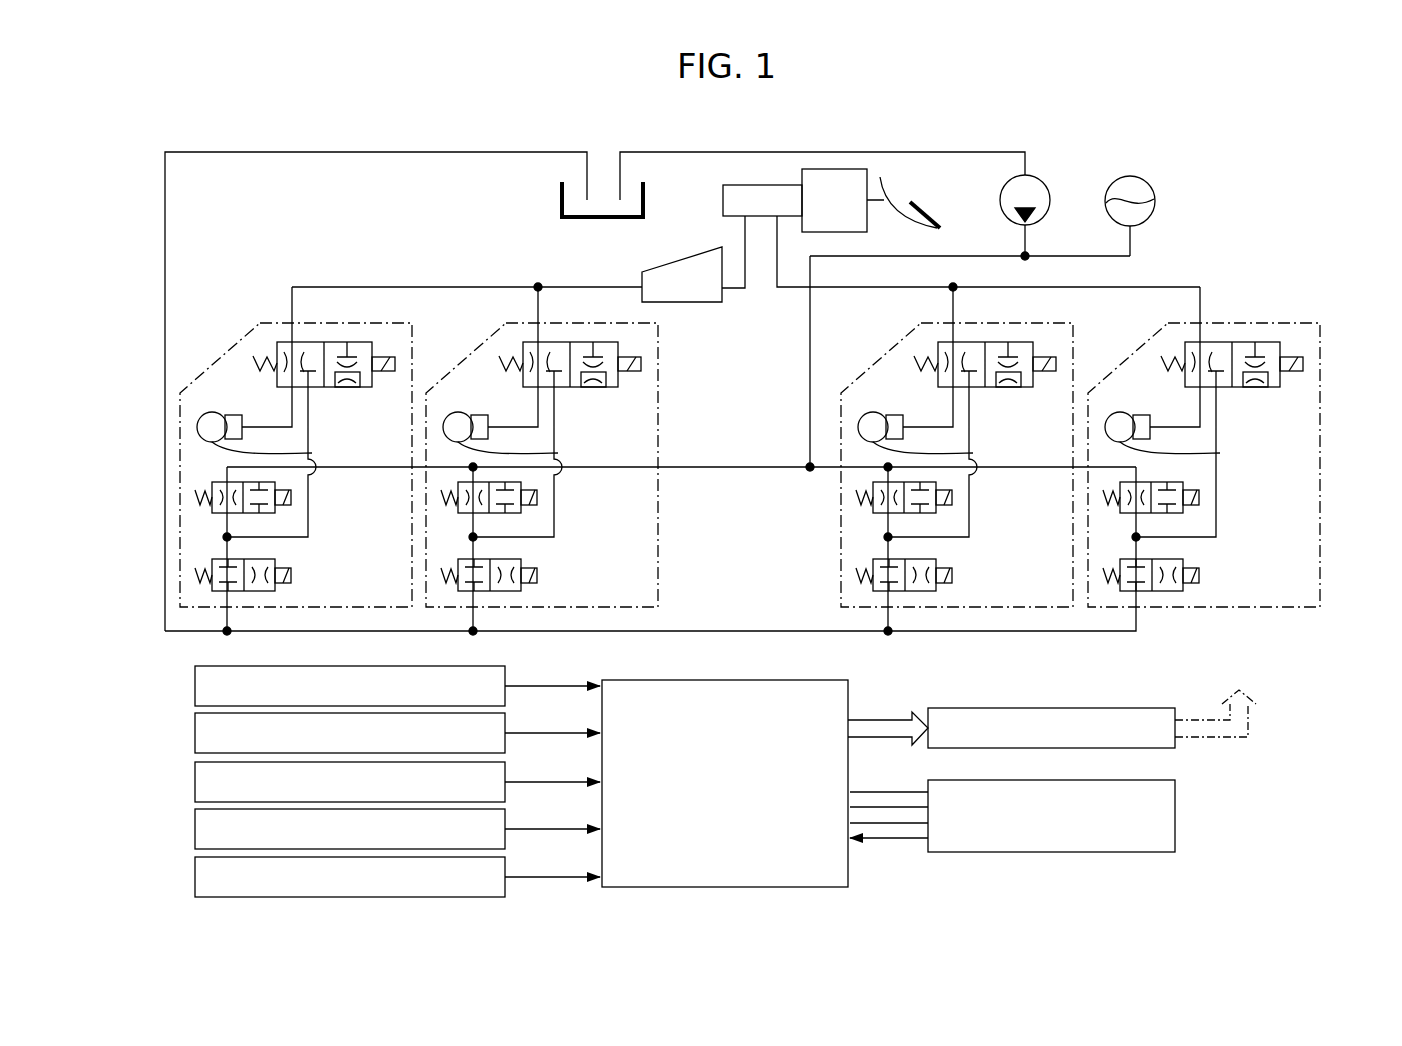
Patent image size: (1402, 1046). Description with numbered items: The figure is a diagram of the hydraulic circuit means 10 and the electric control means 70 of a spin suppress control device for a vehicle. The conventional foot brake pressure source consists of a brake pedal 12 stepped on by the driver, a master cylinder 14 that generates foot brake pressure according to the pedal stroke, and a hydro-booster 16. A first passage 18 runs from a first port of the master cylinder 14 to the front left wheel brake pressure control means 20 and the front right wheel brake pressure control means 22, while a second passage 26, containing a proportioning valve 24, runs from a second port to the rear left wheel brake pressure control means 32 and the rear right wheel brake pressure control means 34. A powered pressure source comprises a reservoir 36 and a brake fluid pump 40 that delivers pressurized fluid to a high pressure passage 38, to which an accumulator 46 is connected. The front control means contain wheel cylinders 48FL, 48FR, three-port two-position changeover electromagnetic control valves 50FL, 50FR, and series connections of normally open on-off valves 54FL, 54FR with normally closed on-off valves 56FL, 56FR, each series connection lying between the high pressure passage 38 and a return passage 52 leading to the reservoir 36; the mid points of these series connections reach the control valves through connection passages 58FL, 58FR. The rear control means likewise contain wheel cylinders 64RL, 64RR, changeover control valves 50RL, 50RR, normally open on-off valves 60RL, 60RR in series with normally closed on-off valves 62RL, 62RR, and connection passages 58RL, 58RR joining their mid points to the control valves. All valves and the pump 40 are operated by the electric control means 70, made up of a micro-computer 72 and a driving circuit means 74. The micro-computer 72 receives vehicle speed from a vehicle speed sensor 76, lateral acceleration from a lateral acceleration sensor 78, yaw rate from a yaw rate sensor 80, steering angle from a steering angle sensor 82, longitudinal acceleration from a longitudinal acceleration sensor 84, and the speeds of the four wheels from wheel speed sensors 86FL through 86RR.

The hydraulic circuit means 10 is at (148, 207).
The brake pedal 12 is at (924, 216).
The master cylinder 14 is at (740, 185).
The hydro-booster 16 is at (834, 200).
The first passage 18 is at (793, 290).
The front left wheel brake pressure control means 20 is at (876, 365).
The front right wheel brake pressure control means 22 is at (1134, 360).
The proportioning valve 24 is at (662, 270).
The second passage 26 is at (365, 286).
The rear left wheel brake pressure control means 32 is at (211, 366).
The rear right wheel brake pressure control means 34 is at (459, 358).
The reservoir 36 is at (562, 205).
The high pressure passage 38 is at (807, 401).
The brake fluid pump 40 is at (1049, 204).
The accumulator 46 is at (1155, 201).
The wheel cylinder 48FL is at (955, 453).
The wheel cylinder 48FR is at (1204, 453).
The 3-ports-2-positions changeover type electromagnetic control valve 50RL is at (310, 342).
The 3-ports-2-positions changeover type electromagnetic control valve 50RR is at (551, 342).
The 3-ports-2-positions changeover type electromagnetic control valve 50FL is at (992, 342).
The 3-ports-2-positions changeover type electromagnetic control valve 50FR is at (1215, 342).
The return passage 52 is at (738, 630).
The normally open type electromagnetic on-off valve 54FL is at (925, 517).
The normally open type electromagnetic on-off valve 54FR is at (1175, 517).
The normally closed type electromagnetic on-off valve 56FL is at (920, 560).
The normally closed type electromagnetic on-off valve 56FR is at (1175, 560).
The connection passage 58RL is at (305, 416).
The connection passage 58RR is at (555, 416).
The connection passage 58FL is at (972, 416).
The connection passage 58FR is at (1220, 416).
The normally open type electromagnetic on-off valve 60RL is at (262, 513).
The normally open type electromagnetic on-off valve 60RR is at (510, 517).
The normally closed type electromagnetic on-off valve 62RL is at (262, 559).
The normally closed type electromagnetic on-off valve 62RR is at (505, 560).
The wheel cylinder 64RL is at (292, 453).
The wheel cylinder 64RR is at (546, 453).
The electric control means 70 is at (980, 783).
The micro-computer 72 is at (725, 783).
The driving circuit means 74 is at (1118, 748).
The vehicle speed sensor 76 is at (195, 688).
The lateral acceleration sensor 78 is at (195, 735).
The yaw rate sensor 80 is at (195, 783).
The steering angle sensor 82 is at (195, 830).
The longitudinal acceleration sensor 84 is at (195, 878).
The wheel speed sensor 86FL is at (1178, 813).
The wheel speed sensor 86RR is at (1099, 803).